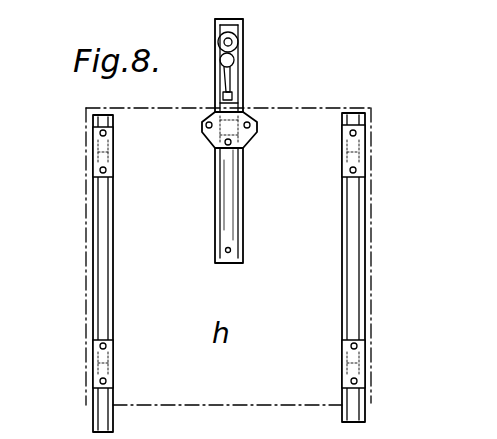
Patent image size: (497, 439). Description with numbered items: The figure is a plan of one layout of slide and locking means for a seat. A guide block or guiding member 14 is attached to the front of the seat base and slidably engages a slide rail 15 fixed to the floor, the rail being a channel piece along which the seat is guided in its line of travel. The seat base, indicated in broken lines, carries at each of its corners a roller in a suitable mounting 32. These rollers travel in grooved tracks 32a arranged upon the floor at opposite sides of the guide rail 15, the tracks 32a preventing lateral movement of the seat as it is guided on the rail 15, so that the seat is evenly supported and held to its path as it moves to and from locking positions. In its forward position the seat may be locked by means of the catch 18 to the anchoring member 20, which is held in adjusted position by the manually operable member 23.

The slide block or guiding member 14 is at (210, 137).
The guiding member or slide rail 15 is at (232, 198).
The catch 18 is at (234, 62).
The anchoring member 20 is at (215, 27).
The manually operable member 23 is at (238, 35).
The roller mounting 32 is at (113, 160).
The grooved tracks 32a is at (393, 265).